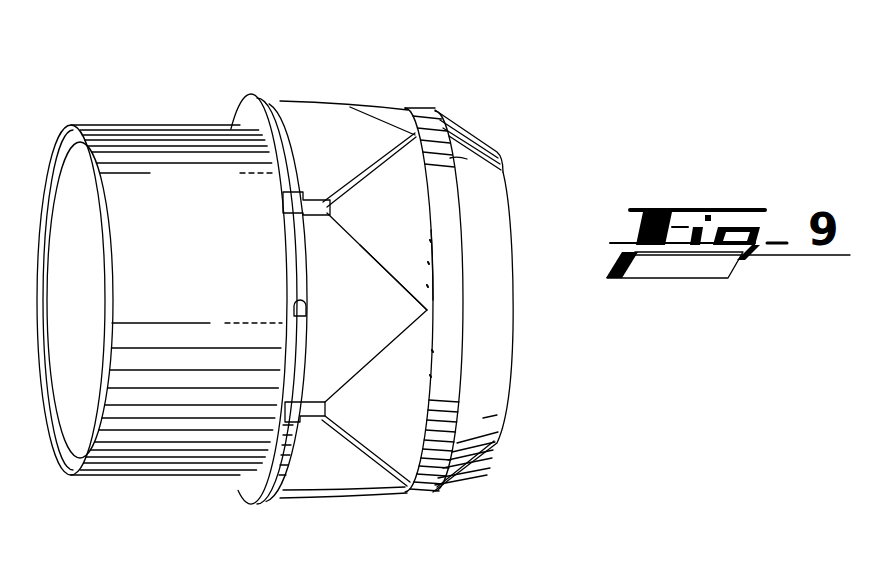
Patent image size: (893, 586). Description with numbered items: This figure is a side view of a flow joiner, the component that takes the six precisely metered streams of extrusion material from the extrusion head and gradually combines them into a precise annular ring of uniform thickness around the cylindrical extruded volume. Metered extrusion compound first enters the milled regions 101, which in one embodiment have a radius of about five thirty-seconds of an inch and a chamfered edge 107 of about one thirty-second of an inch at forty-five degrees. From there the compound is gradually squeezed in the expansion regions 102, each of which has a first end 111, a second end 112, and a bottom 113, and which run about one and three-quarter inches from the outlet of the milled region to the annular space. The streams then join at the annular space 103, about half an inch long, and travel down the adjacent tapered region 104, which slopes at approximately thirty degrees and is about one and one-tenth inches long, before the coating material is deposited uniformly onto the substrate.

The milled region 101 is at (316, 197).
The expansion region 102 is at (413, 231).
The annular space 103 is at (452, 172).
The tapered region 104 is at (493, 308).
The chamfered edge 107 is at (281, 118).
The first end 111 is at (325, 202).
The second end 112 is at (433, 229).
The bottom 113 is at (402, 252).